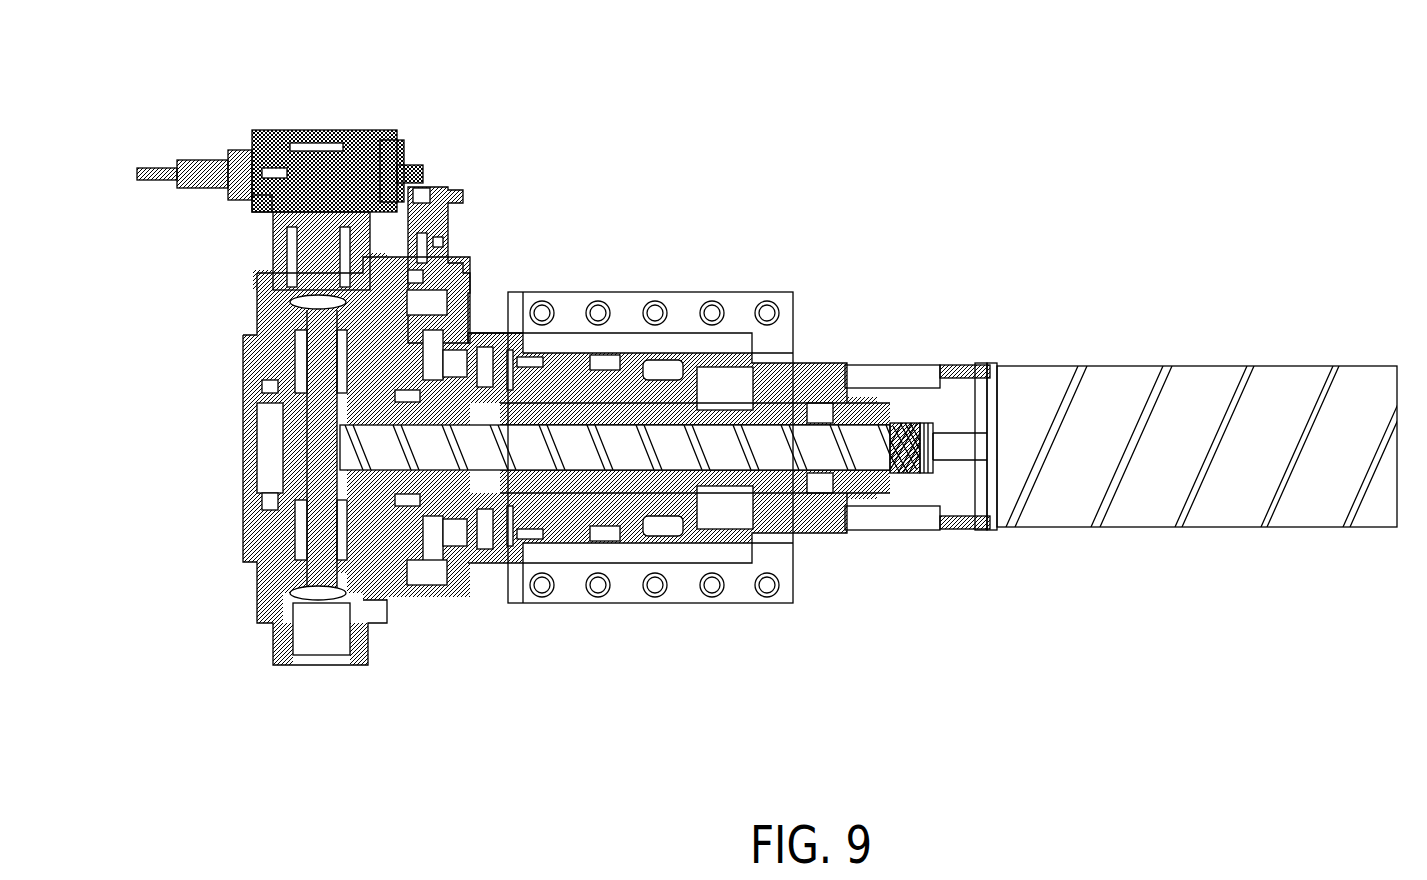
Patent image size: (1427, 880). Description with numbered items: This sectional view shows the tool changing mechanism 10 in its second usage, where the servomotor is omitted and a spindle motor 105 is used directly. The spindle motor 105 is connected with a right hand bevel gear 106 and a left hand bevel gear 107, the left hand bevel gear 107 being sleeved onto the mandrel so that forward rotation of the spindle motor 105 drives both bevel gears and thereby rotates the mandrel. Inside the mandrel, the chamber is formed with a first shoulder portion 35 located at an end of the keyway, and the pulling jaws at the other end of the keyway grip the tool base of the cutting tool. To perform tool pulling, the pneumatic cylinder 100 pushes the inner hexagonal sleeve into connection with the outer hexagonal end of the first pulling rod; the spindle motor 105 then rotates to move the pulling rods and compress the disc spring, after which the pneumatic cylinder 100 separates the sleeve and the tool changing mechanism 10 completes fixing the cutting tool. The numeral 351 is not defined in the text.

The tool changing mechanism 10 is at (282, 155).
The left hand bevel gear 107 is at (343, 133).
The right hand bevel gear 106 is at (253, 214).
The first shoulder portion 35 is at (416, 142).
The coupling shaft end 351 is at (418, 162).
The pneumatic cylinder 100 is at (442, 190).
The spindle motor 105 is at (1212, 366).